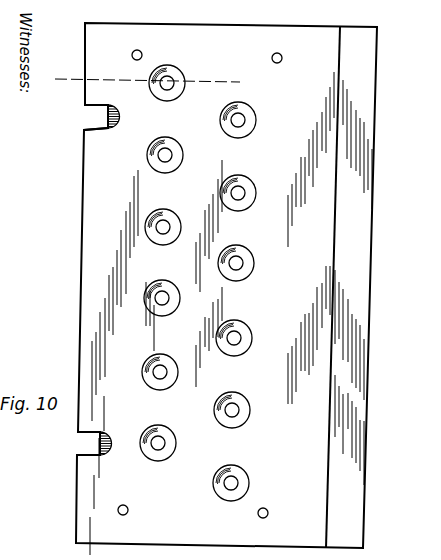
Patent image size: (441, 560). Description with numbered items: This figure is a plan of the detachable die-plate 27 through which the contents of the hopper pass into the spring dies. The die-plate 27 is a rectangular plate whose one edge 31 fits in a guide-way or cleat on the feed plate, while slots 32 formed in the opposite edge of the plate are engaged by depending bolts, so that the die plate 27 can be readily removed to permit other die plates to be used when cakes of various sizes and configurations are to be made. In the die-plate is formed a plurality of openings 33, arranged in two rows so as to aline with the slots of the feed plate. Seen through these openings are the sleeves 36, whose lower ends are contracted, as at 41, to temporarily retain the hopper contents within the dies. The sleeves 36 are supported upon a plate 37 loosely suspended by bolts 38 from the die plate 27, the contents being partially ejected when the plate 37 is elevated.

The die-plate 27 is at (216, 289).
The edge of the die plate 31 is at (357, 298).
The slots 32 is at (88, 440).
The openings 33 is at (250, 365).
The sleeves 36 is at (119, 515).
The plate 37 is at (100, 455).
The bolts 38 is at (378, 490).
The contracted lower ends 41 is at (246, 484).